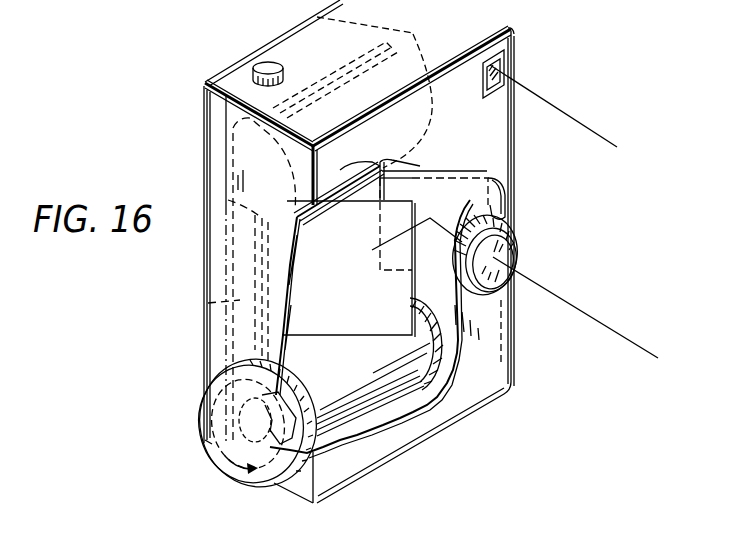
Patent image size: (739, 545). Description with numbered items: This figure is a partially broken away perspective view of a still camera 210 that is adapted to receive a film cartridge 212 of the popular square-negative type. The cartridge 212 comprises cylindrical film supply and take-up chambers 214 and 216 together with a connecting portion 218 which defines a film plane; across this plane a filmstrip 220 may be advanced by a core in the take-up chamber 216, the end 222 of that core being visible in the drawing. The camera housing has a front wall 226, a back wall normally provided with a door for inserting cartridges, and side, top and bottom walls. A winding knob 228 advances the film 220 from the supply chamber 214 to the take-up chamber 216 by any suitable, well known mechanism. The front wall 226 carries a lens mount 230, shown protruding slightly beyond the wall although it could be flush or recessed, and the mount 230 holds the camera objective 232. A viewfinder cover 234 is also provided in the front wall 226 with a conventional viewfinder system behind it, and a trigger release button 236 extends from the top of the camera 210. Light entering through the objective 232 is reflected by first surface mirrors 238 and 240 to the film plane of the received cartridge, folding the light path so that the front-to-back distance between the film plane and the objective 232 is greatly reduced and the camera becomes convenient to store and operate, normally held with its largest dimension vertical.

The still camera 210 is at (198, 92).
The film cartridge 212 is at (245, 167).
The film supply chamber 214 is at (420, 42).
The take-up chamber 216 is at (408, 406).
The connecting portion 218 is at (208, 303).
The filmstrip 220 is at (370, 195).
The end of the core 222 is at (290, 417).
The front wall 226 is at (492, 357).
The winding knob 228 is at (203, 404).
The lens mount 230 is at (518, 242).
The camera objective 232 is at (514, 262).
The viewfinder cover 234 is at (500, 72).
The trigger release button 236 is at (263, 62).
The first surface mirror 238 is at (475, 200).
The first surface mirror 240 is at (350, 313).